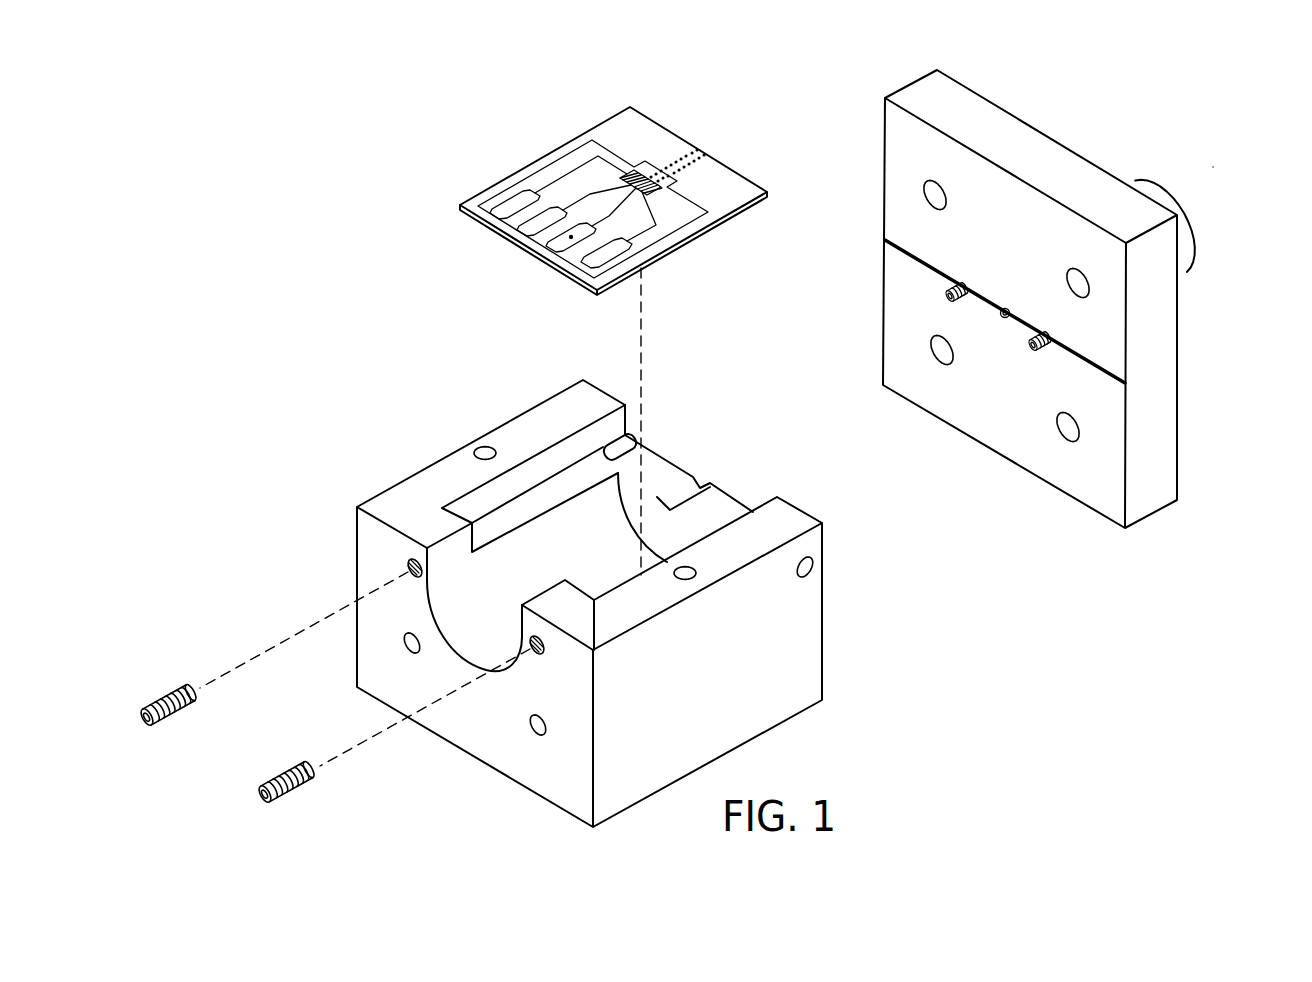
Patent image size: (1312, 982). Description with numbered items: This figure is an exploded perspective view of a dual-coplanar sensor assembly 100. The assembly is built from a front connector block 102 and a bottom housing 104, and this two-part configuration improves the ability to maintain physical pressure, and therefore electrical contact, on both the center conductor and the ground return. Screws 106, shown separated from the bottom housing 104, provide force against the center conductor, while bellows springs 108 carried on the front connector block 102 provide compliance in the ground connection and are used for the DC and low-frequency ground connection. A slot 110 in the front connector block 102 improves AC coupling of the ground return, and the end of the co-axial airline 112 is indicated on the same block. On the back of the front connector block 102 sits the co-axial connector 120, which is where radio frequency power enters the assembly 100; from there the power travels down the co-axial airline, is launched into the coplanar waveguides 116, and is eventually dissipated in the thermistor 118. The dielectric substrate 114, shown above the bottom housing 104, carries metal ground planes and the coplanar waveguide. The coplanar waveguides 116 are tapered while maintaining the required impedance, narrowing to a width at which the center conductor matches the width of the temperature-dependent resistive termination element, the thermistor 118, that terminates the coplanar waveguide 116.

The dual-coplanar sensor assembly 100 is at (1213, 167).
The front connector block 102 is at (1163, 418).
The bottom housing 104 is at (808, 650).
The screws 106 is at (300, 793).
The bellows springs 108 is at (950, 296).
The slot 110 is at (1133, 380).
The end of the co-axial airline 112 is at (1005, 320).
The dielectric substrate 114 is at (535, 176).
The coplanar waveguides 116 is at (697, 152).
The thermistor 118 is at (646, 176).
The co-axial connector 120 is at (1187, 238).